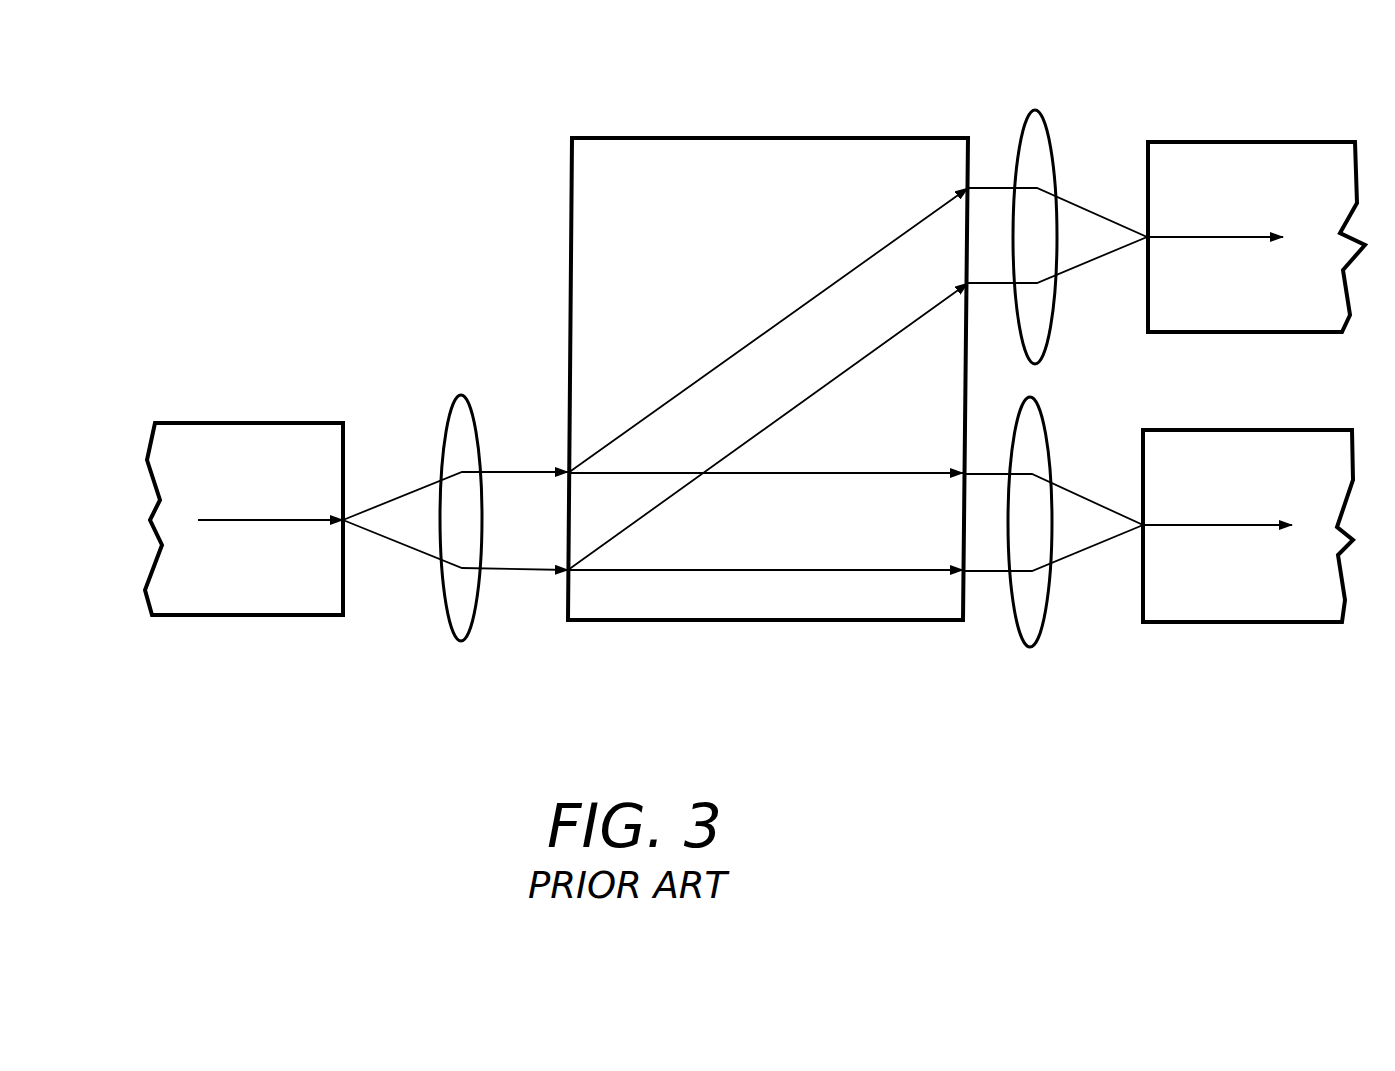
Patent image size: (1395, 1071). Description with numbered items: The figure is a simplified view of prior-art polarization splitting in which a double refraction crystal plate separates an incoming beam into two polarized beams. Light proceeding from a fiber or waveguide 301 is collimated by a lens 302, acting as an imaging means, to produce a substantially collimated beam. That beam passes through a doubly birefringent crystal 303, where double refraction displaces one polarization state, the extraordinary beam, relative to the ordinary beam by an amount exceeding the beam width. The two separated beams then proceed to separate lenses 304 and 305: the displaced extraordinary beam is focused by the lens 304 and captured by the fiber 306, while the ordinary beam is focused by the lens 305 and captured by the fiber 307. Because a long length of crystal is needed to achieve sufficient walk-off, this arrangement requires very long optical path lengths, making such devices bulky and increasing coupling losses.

The fiber 301 is at (266, 430).
The lens 302 is at (455, 412).
The doubly birefringent crystal 303 is at (617, 160).
The lens 304 is at (1040, 130).
The lens 305 is at (1030, 640).
The fiber 306 is at (1237, 150).
The fiber 307 is at (1287, 612).